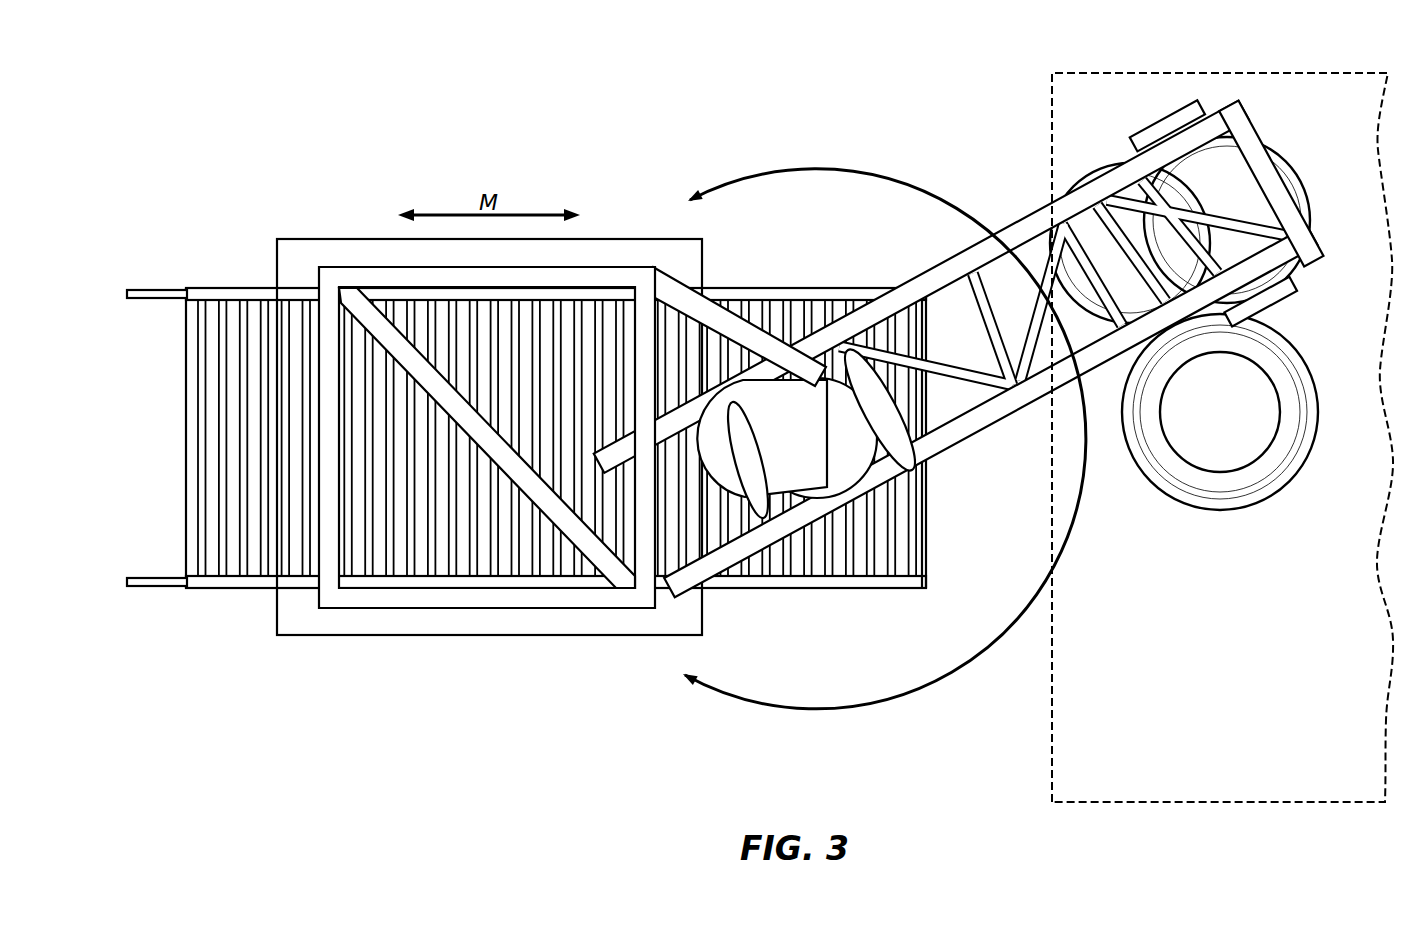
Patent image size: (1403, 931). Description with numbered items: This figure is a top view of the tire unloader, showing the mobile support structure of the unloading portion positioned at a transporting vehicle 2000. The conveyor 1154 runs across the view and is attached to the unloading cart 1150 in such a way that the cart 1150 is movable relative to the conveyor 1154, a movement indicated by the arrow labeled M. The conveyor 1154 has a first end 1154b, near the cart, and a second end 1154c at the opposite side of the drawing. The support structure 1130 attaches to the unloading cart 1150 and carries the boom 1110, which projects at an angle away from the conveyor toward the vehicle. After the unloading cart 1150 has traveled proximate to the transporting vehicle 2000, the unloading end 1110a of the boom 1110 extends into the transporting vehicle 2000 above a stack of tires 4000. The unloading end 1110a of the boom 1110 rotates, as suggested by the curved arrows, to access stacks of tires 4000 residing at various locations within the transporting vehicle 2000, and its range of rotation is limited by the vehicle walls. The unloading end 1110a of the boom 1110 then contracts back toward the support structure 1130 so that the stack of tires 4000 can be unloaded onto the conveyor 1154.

The conveyor 1154 is at (211, 594).
The first end 1154b is at (930, 528).
The second end 1154c is at (180, 441).
The unloading cart 1150 is at (314, 230).
The support structure 1130 is at (585, 276).
The boom 1110 is at (1018, 210).
The unloading end 1110a is at (1283, 168).
The stack of tires 4000 is at (1229, 514).
The transporting vehicle 2000 is at (1310, 68).